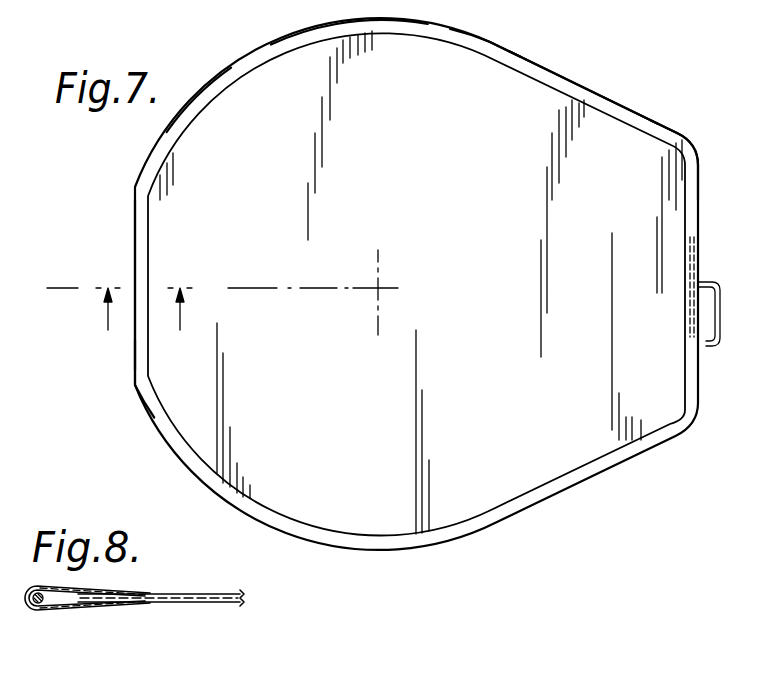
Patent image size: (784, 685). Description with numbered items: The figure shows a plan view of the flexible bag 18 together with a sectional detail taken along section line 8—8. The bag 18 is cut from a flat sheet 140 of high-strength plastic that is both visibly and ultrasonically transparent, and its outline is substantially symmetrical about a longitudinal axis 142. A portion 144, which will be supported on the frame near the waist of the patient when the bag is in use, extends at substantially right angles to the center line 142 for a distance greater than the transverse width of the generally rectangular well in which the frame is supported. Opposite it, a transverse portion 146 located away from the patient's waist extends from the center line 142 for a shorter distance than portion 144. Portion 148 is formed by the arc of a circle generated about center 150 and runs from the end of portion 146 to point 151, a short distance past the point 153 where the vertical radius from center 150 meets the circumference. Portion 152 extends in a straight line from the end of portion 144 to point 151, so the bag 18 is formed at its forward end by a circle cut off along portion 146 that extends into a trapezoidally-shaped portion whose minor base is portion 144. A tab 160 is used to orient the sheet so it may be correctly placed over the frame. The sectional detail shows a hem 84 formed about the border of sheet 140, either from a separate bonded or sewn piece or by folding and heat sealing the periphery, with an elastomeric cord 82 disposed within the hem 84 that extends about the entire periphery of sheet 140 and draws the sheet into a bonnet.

In FIG. 7, the flexible bag 18 is at (131, 370).
In FIG. 8, the flexible bag 18 is at (185, 603).
In FIG. 8, the elastomeric cord 82 is at (43, 612).
In FIG. 7, the hem 84 is at (285, 53).
In FIG. 8, the hem 84 is at (86, 609).
In FIG. 7, the flat sheet 140 is at (494, 247).
In FIG. 7, the longitudinal axis 142 is at (63, 284).
In FIG. 7, the portion 144 is at (699, 164).
In FIG. 7, the transverse portion 146 is at (135, 213).
In FIG. 7, the portion 148 is at (196, 107).
In FIG. 7, the center 150 is at (378, 303).
In FIG. 7, the point 151 is at (486, 42).
In FIG. 7, the portion 152 is at (576, 84).
In FIG. 7, the point 153 is at (383, 22).
In FIG. 7, the tab 160 is at (712, 340).
In FIG. 7, the section line 8- 8 is at (144, 293).